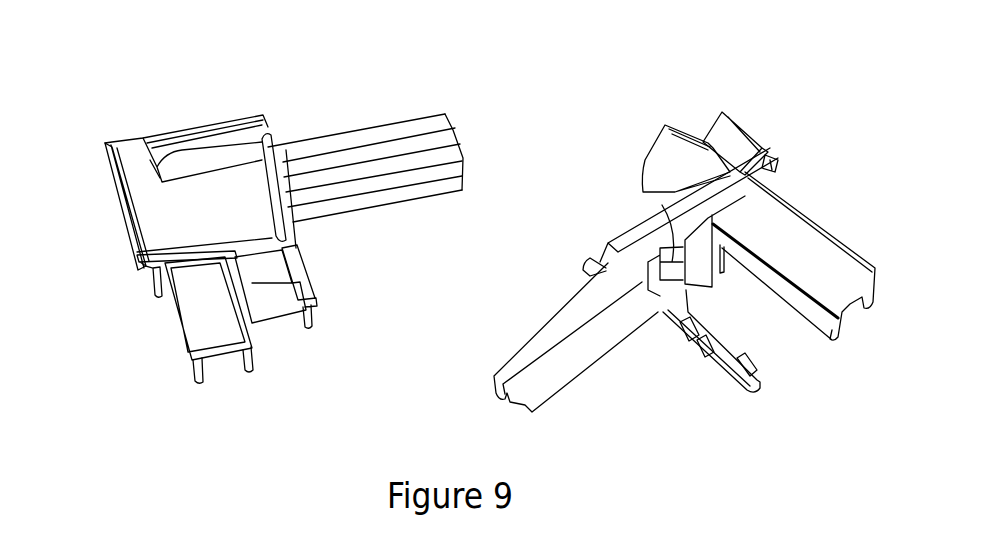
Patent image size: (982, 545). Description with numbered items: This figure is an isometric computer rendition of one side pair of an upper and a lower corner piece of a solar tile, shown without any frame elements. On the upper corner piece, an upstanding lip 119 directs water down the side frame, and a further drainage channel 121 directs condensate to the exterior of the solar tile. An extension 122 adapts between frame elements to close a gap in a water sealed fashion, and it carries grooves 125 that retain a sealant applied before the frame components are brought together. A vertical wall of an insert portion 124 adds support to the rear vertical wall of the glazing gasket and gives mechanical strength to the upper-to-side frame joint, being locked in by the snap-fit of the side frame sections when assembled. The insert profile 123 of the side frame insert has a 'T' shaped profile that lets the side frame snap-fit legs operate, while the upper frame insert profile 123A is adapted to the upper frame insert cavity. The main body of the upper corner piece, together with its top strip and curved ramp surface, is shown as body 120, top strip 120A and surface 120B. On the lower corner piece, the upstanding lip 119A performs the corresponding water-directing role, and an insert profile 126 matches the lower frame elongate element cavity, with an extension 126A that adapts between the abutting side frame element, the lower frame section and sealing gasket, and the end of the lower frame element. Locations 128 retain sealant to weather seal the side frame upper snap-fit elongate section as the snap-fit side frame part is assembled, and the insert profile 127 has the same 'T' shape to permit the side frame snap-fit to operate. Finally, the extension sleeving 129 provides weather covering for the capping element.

The upstanding lip 119 is at (121, 190).
The upstanding lip 119A is at (745, 124).
The housing body 120 is at (222, 153).
The grooved top strip 120A is at (212, 125).
The curved ramp surface 120B is at (165, 192).
The drainage channel 121 is at (272, 190).
The extension 122 is at (318, 283).
The insert profile 123 is at (218, 358).
The upper frame insert profile 123A is at (458, 137).
The insert portion 124 is at (268, 303).
The grooves 125 is at (282, 264).
The insert profile 126 is at (588, 378).
The extension 126A is at (720, 377).
The insert profile 127 is at (848, 310).
The locations for sealant 128 is at (720, 206).
The extension sleeving 129 is at (672, 173).